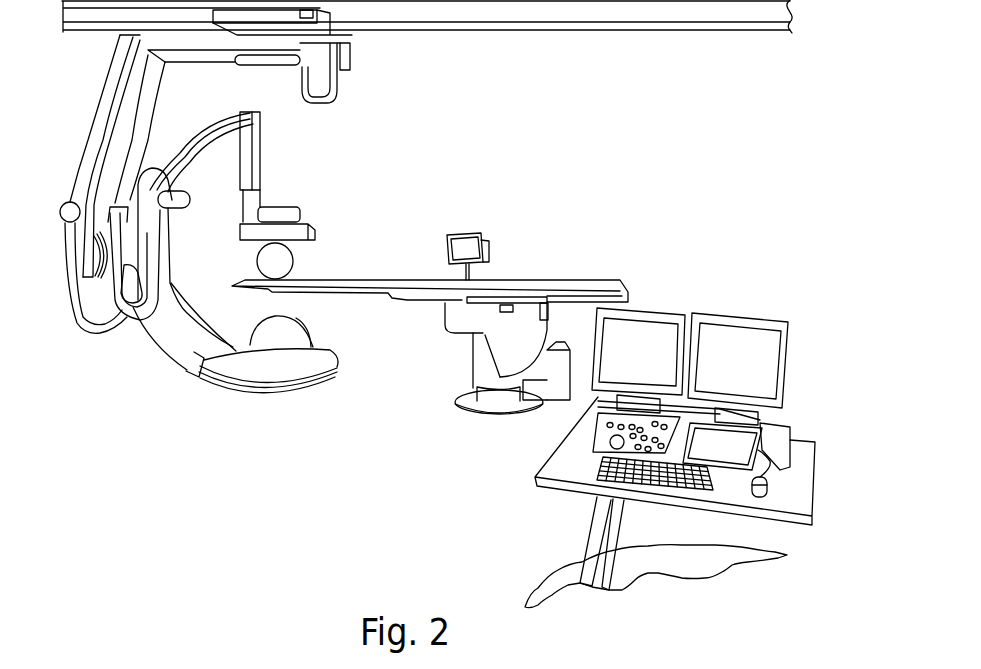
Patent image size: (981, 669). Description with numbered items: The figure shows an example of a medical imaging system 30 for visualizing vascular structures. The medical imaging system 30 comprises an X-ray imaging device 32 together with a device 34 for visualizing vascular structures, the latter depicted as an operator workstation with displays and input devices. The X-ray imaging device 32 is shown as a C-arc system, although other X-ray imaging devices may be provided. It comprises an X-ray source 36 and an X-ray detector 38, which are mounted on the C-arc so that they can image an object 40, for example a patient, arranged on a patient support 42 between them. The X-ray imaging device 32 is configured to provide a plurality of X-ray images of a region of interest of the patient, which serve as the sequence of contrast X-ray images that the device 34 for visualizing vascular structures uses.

The medical imaging system 30 is at (452, 168).
The X-ray imaging device 32 is at (120, 373).
The device for visualizing vascular structures 34 is at (500, 495).
The X-ray source 36 is at (308, 328).
The X-ray detector 38 is at (333, 218).
The object 40 is at (292, 267).
The patient support 42 is at (548, 278).